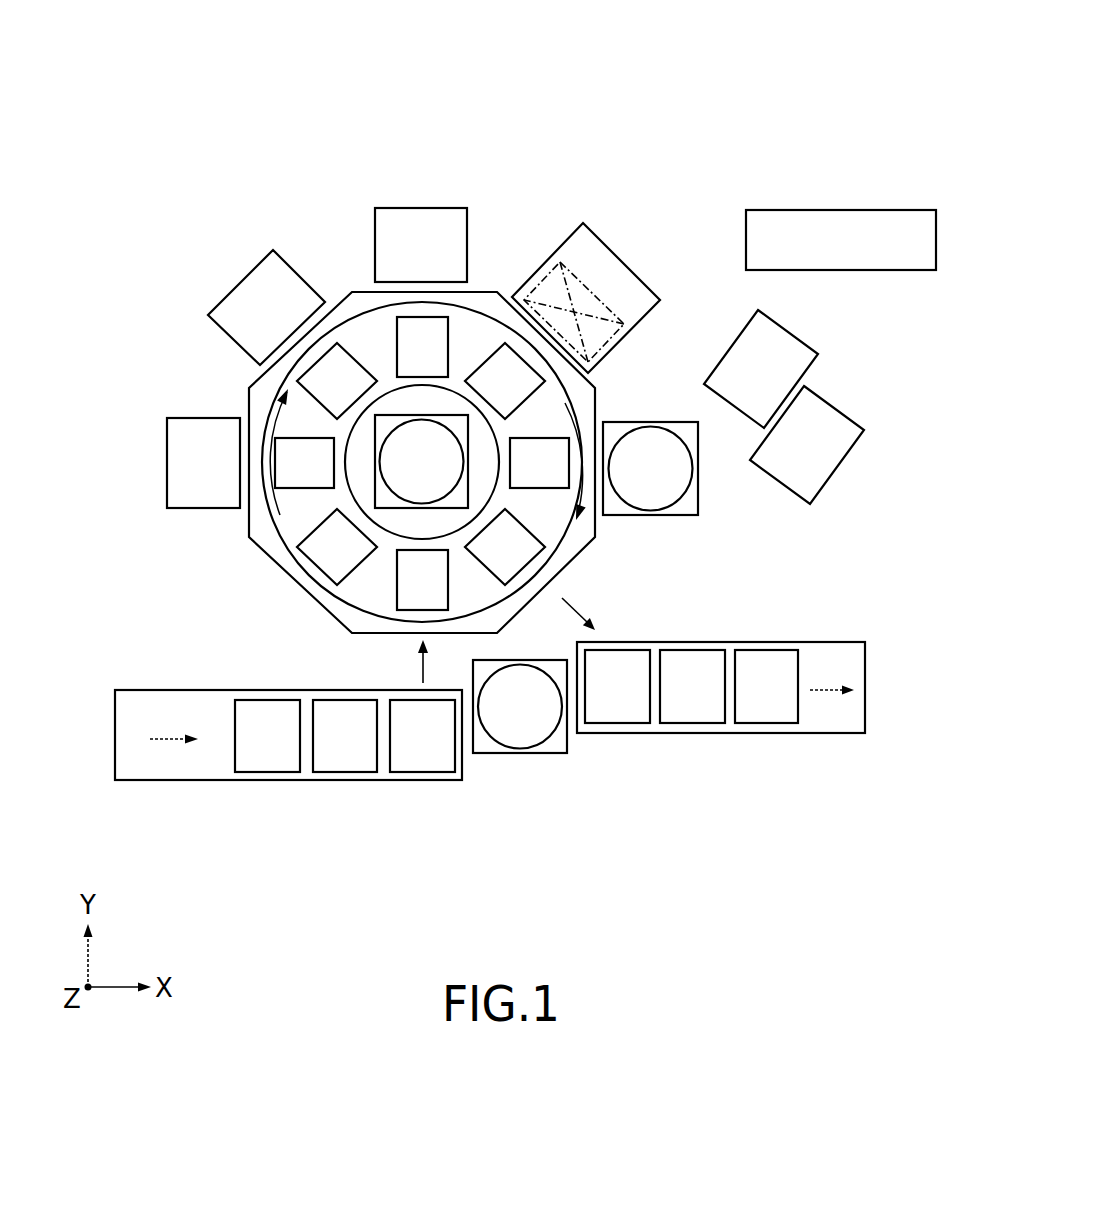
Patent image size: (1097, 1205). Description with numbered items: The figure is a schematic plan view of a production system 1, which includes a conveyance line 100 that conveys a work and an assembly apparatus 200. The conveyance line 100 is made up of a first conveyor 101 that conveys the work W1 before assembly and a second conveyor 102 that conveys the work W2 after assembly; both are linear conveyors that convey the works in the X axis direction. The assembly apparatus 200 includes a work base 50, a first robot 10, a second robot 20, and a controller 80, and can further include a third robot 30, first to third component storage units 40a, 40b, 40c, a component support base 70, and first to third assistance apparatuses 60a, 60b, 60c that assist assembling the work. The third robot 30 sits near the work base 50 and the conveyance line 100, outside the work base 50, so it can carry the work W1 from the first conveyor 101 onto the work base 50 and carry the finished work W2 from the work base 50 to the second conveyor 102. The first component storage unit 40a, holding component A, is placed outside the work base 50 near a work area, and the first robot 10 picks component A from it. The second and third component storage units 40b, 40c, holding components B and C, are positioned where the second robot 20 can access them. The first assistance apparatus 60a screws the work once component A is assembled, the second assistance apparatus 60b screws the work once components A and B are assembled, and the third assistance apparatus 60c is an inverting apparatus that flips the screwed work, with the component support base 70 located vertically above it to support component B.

The production system 1 is at (732, 78).
The first robot 10 is at (388, 415).
The second robot 20 is at (695, 468).
The third robot 30 is at (532, 755).
The first component storage unit 40a is at (247, 288).
The second component storage unit 40b is at (830, 450).
The third component storage unit 40c is at (798, 366).
The work base 50 is at (483, 303).
The first assistance apparatus 60a is at (175, 463).
The second assistance apparatus 60b is at (420, 220).
The third assistance apparatus 60c is at (610, 270).
The component support base 70 is at (610, 343).
The controller 80 is at (852, 206).
The conveyance line 100 is at (299, 786).
The first conveyor 101 is at (299, 772).
The second conveyor 102 is at (721, 723).
The assembly apparatus 200 is at (585, 178).
The work before assembly W1 is at (428, 760).
The work after assembly W2 is at (622, 713).